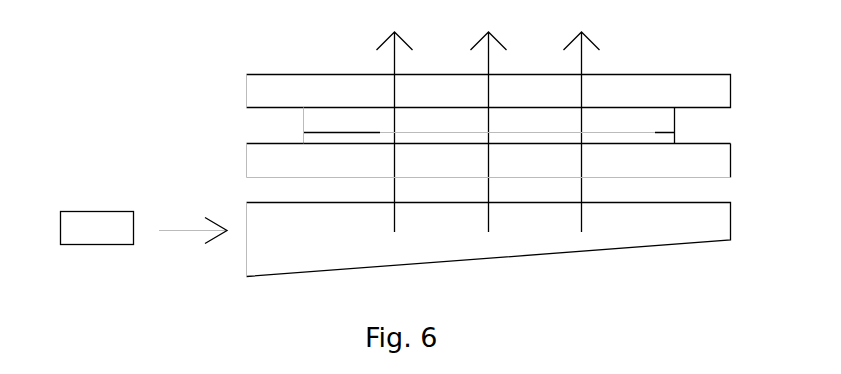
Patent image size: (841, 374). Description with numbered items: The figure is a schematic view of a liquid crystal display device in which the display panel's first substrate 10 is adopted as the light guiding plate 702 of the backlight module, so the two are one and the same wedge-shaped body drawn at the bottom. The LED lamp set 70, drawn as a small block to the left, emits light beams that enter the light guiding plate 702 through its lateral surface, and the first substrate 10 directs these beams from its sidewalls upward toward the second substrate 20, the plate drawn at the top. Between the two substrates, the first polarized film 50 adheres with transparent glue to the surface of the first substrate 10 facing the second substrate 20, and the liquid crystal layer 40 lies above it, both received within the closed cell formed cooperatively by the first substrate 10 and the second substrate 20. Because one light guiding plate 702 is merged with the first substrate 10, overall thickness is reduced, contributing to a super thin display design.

The first substrate 10 is at (713, 165).
The second substrate 20 is at (718, 83).
The liquid crystal layer 40 is at (667, 120).
The first polarized film 50 is at (665, 140).
The LED lamp set 70 is at (83, 226).
The light guiding plate 702 is at (692, 228).